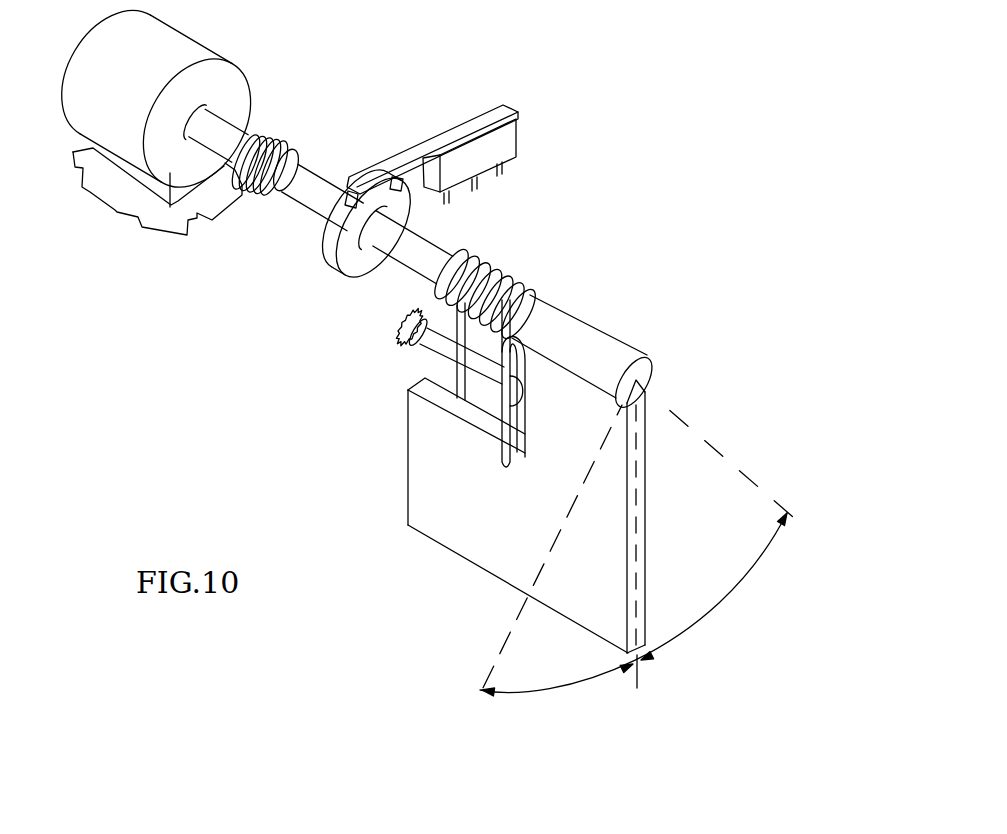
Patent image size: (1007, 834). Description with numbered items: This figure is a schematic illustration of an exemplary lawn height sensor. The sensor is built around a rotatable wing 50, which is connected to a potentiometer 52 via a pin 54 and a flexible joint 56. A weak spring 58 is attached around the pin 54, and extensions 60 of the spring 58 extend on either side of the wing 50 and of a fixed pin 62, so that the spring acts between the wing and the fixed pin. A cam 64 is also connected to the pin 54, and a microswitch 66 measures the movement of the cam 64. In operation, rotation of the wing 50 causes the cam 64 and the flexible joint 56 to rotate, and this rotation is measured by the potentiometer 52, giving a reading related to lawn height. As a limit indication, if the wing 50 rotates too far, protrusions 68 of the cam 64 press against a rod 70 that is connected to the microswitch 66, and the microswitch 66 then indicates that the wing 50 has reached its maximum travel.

The rotatable wing 50 is at (465, 532).
The potentiometer 52 is at (170, 177).
The pin 54 is at (417, 243).
The flexible joint 56 is at (267, 193).
The weak spring 58 is at (500, 280).
The extensions 60 is at (507, 457).
The fixed pin 62 is at (437, 347).
The cam 64 is at (407, 207).
The microswitch 66 is at (497, 145).
The protrusions 68 is at (338, 200).
The rod 70 is at (398, 157).